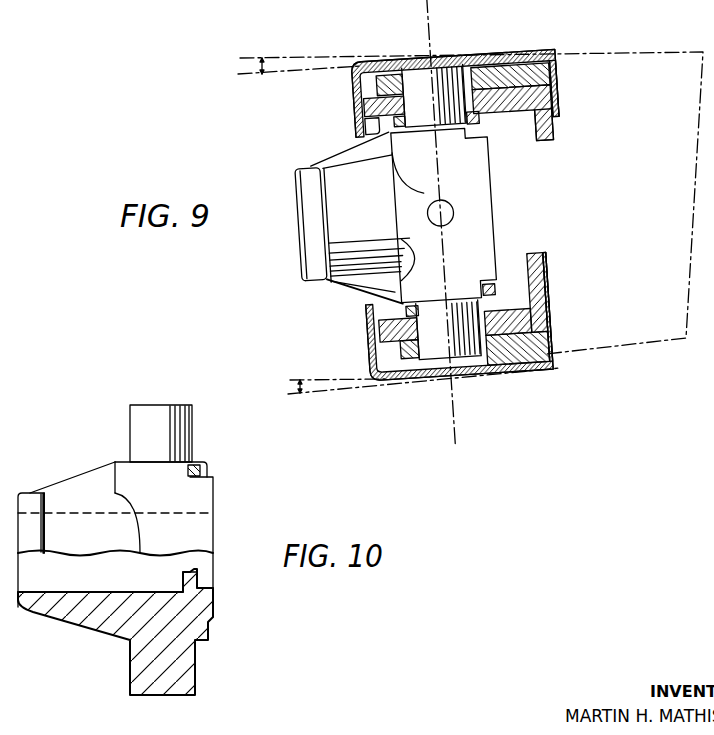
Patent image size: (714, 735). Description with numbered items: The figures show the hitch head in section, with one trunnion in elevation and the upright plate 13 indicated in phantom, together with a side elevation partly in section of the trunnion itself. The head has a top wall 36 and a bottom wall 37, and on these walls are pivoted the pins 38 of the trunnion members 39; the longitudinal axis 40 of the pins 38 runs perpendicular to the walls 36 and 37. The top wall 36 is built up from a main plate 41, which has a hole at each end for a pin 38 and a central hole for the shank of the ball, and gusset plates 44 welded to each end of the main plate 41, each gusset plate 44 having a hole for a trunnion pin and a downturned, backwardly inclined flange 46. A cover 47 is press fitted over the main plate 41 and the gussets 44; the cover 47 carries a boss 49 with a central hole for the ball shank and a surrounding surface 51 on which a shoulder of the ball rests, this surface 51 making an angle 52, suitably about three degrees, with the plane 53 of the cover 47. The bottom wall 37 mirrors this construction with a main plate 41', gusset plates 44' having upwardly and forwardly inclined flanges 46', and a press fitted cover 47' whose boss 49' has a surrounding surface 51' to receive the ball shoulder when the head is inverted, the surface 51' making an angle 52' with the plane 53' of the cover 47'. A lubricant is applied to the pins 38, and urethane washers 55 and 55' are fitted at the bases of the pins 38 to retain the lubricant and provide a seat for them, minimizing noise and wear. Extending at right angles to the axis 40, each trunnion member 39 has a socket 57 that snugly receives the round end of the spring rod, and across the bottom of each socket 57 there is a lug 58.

In FIG. 9, the wheel outline 13 is at (636, 52).
In FIG. 9, the top wall 36 is at (586, 118).
In FIG. 9, the bottom wall 37 is at (572, 283).
In FIG. 9, the pin 38 is at (446, 326).
In FIG. 10, the pin 38 is at (131, 428).
In FIG. 9, the trunnion member 39 is at (340, 275).
In FIG. 10, the trunnion member 39 is at (62, 502).
In FIG. 9, the longitudinal axis 40 is at (458, 428).
In FIG. 9, the main plate 41 is at (531, 75).
In FIG. 9, the main plate 41' is at (536, 343).
In FIG. 9, the gusset plate 44 is at (532, 113).
In FIG. 9, the gusset plate 44' is at (532, 312).
In FIG. 9, the flange 46 is at (561, 130).
In FIG. 9, the flange 46' is at (559, 291).
In FIG. 9, the cover 47 is at (527, 66).
In FIG. 9, the cover 47' is at (547, 322).
In FIG. 9, the boss 49 is at (454, 75).
In FIG. 9, the boss 49' is at (459, 333).
In FIG. 9, the surrounding surface 51 is at (394, 79).
In FIG. 9, the surrounding surface 51' is at (414, 361).
In FIG. 9, the angle 52 is at (299, 54).
In FIG. 9, the angle 52' is at (424, 396).
In FIG. 9, the plane 53 is at (433, 77).
In FIG. 9, the plane 53' is at (456, 350).
In FIG. 9, the urethane washer 55 is at (495, 133).
In FIG. 9, the urethane washer 55' is at (507, 271).
In FIG. 10, the socket 57 is at (78, 592).
In FIG. 10, the lug 58 is at (183, 578).